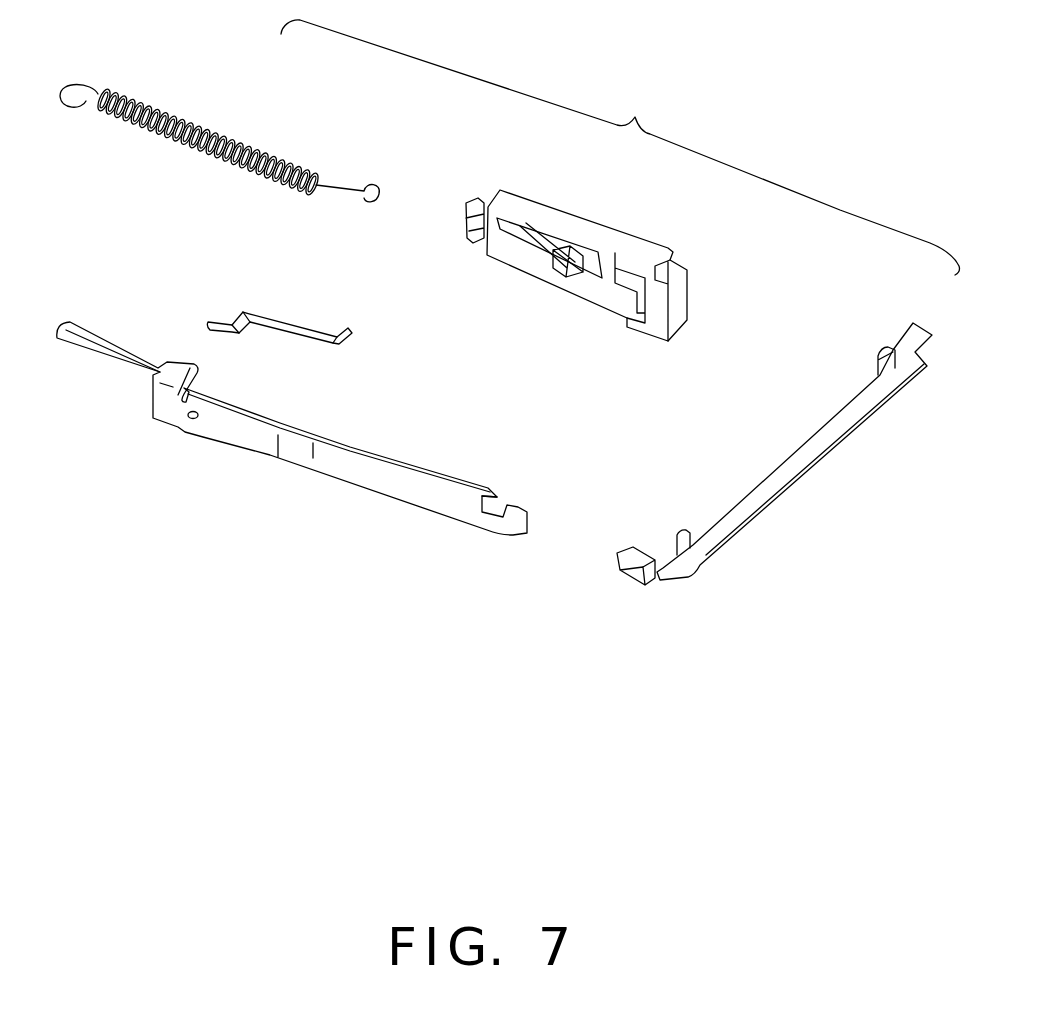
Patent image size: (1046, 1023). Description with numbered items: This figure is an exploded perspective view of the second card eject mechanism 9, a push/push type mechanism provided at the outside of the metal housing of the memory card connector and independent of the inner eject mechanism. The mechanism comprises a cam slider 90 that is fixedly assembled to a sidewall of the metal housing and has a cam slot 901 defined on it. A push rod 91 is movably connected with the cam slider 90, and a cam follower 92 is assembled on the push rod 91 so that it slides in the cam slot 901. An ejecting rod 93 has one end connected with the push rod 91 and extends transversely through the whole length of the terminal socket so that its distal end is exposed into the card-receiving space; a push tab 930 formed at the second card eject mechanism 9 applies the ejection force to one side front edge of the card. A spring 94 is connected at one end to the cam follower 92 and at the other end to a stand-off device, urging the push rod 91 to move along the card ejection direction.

The second card eject mechanism 9 is at (620, 147).
The cam slider 90 is at (586, 205).
The cam slot 901 is at (550, 247).
The push rod 91 is at (418, 440).
The cam follower 92 is at (300, 295).
The ejecting rod 93 is at (774, 454).
The push tab 930 is at (877, 358).
The spring 94 is at (243, 119).